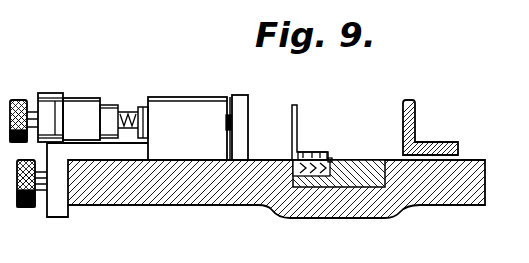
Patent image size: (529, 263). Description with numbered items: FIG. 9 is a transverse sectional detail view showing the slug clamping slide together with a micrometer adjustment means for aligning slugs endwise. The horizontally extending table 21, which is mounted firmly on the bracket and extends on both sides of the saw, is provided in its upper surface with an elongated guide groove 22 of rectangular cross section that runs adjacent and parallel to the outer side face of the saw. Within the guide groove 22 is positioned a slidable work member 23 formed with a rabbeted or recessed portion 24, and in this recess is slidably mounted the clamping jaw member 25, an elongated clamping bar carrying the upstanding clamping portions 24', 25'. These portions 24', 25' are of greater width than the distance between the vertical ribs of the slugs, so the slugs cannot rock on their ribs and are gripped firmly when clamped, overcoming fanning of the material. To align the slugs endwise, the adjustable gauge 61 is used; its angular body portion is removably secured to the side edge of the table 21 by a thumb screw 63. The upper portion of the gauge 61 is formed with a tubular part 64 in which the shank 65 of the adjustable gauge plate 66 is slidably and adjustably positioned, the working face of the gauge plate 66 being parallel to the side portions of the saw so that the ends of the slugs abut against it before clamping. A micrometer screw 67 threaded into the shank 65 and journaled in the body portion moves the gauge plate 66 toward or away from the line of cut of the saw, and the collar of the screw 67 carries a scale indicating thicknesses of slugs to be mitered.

The table 21 is at (461, 163).
The guide groove 22 is at (362, 188).
The slidable work member 23 is at (377, 163).
The rabbeted or recessed portion 24 is at (339, 159).
The upstanding clamping portion 24' is at (354, 128).
The clamping jaw member 25 is at (313, 144).
The upstanding clamping portion 25' is at (308, 120).
The adjustable gauge 61 is at (135, 108).
The thumb screw 63 is at (26, 207).
The tubular part 64 is at (209, 97).
The shank 65 is at (150, 97).
The adjustable gauge plate 66 is at (238, 128).
The micrometer screw 67 is at (18, 101).